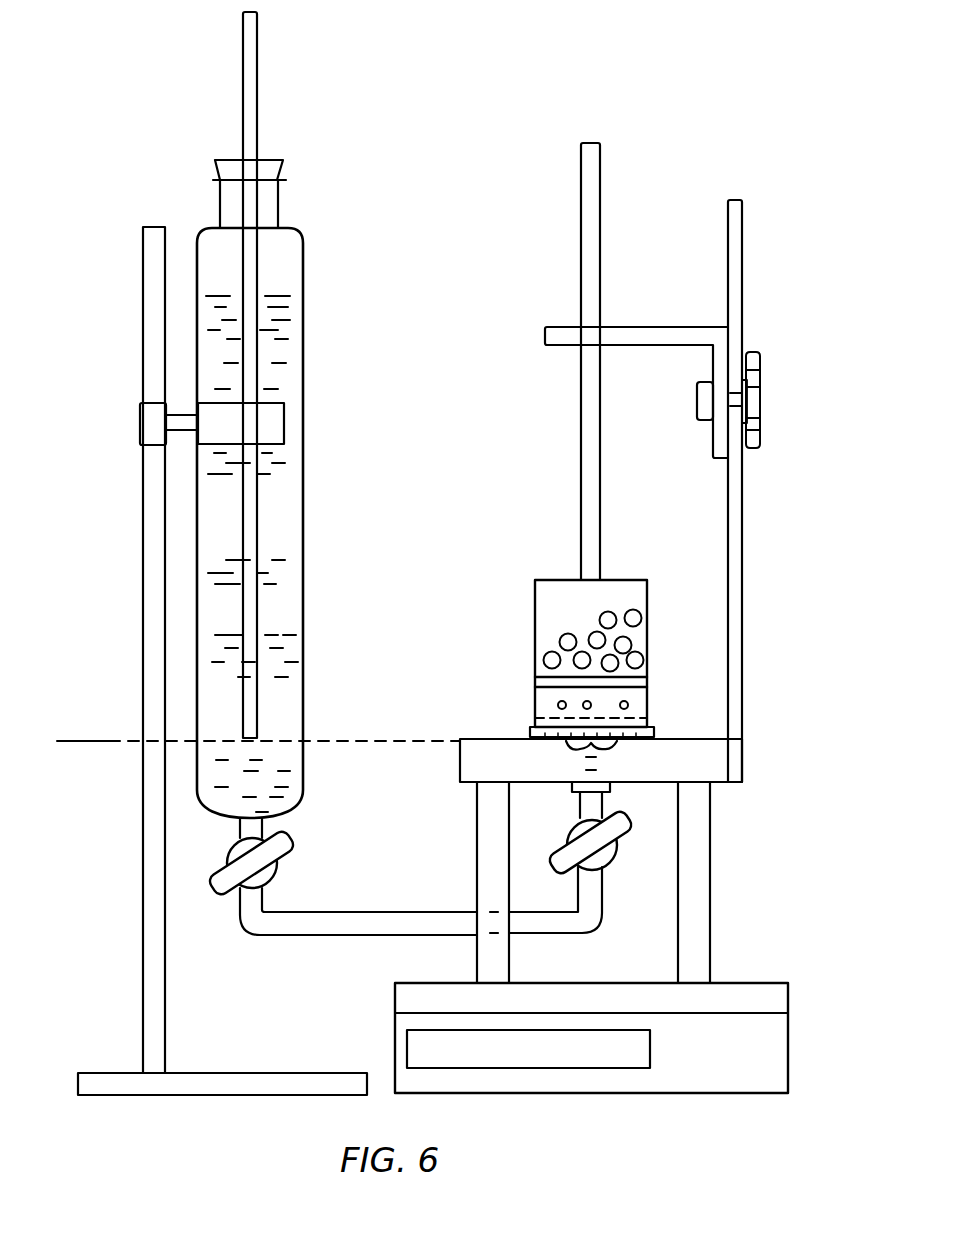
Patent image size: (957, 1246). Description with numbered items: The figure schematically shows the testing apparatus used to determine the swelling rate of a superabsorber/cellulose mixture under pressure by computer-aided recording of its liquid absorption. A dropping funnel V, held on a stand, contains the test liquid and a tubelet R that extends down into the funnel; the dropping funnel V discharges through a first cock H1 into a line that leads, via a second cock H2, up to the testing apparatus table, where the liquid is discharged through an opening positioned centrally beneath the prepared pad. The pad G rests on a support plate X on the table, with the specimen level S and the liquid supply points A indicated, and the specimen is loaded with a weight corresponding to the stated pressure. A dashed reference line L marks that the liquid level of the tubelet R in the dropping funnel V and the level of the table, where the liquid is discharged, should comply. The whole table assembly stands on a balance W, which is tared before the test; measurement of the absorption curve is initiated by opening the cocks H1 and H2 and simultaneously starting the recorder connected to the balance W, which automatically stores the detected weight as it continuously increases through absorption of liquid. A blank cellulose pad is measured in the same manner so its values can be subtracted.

The rod R is at (257, 95).
The graduated cylinder vessel V is at (303, 515).
The cock H1 is at (278, 870).
The cock H2 is at (615, 857).
The gel container G is at (535, 653).
The air bubbles A is at (630, 705).
The sample level S is at (535, 718).
The support plate X is at (655, 730).
The liquid level line L is at (640, 760).
The balance W is at (788, 1037).